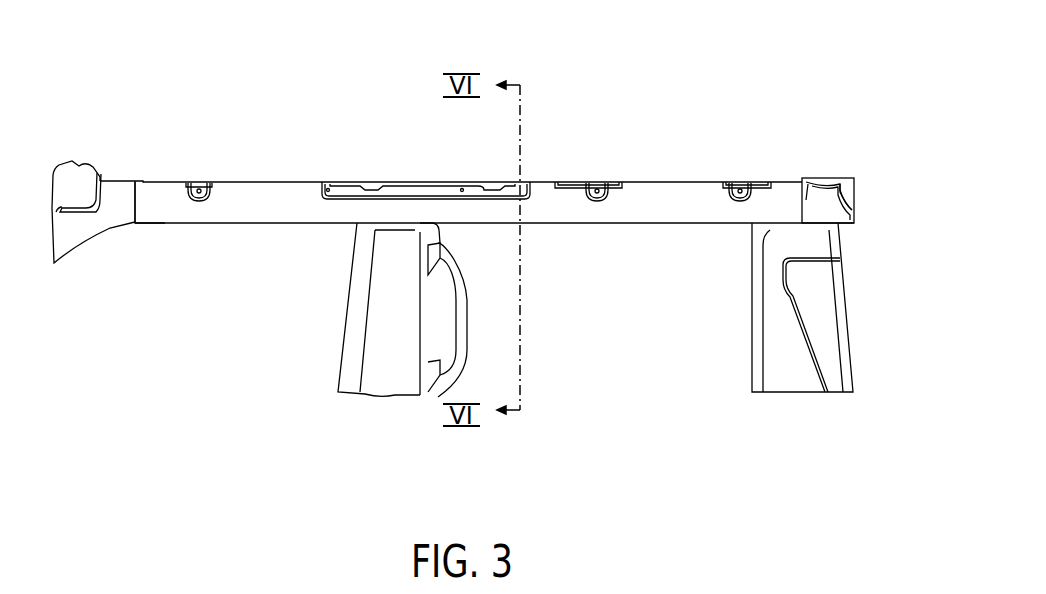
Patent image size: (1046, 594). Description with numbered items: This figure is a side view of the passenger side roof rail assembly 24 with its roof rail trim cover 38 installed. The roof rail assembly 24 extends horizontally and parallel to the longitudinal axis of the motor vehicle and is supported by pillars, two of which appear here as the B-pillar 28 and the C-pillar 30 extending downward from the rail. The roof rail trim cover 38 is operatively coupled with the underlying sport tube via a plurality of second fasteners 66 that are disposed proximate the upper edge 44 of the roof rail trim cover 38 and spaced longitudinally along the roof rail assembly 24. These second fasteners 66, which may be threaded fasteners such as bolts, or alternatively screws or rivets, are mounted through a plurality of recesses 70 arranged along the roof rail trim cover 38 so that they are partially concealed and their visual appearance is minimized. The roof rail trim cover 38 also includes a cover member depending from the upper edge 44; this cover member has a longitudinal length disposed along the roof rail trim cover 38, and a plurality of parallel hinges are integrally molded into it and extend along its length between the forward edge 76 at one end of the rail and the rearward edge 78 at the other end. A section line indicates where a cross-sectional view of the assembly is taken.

The passenger side roof rail assembly 24 is at (858, 190).
The B-pillar 28 is at (362, 363).
The C-pillar 30 is at (772, 370).
The roof rail trim cover 38 is at (163, 210).
The upper edge 44 is at (225, 187).
The second fasteners 66 is at (200, 185).
The recesses 70 is at (198, 186).
The forward edge 76 is at (130, 226).
The rearward edge 78 is at (820, 190).